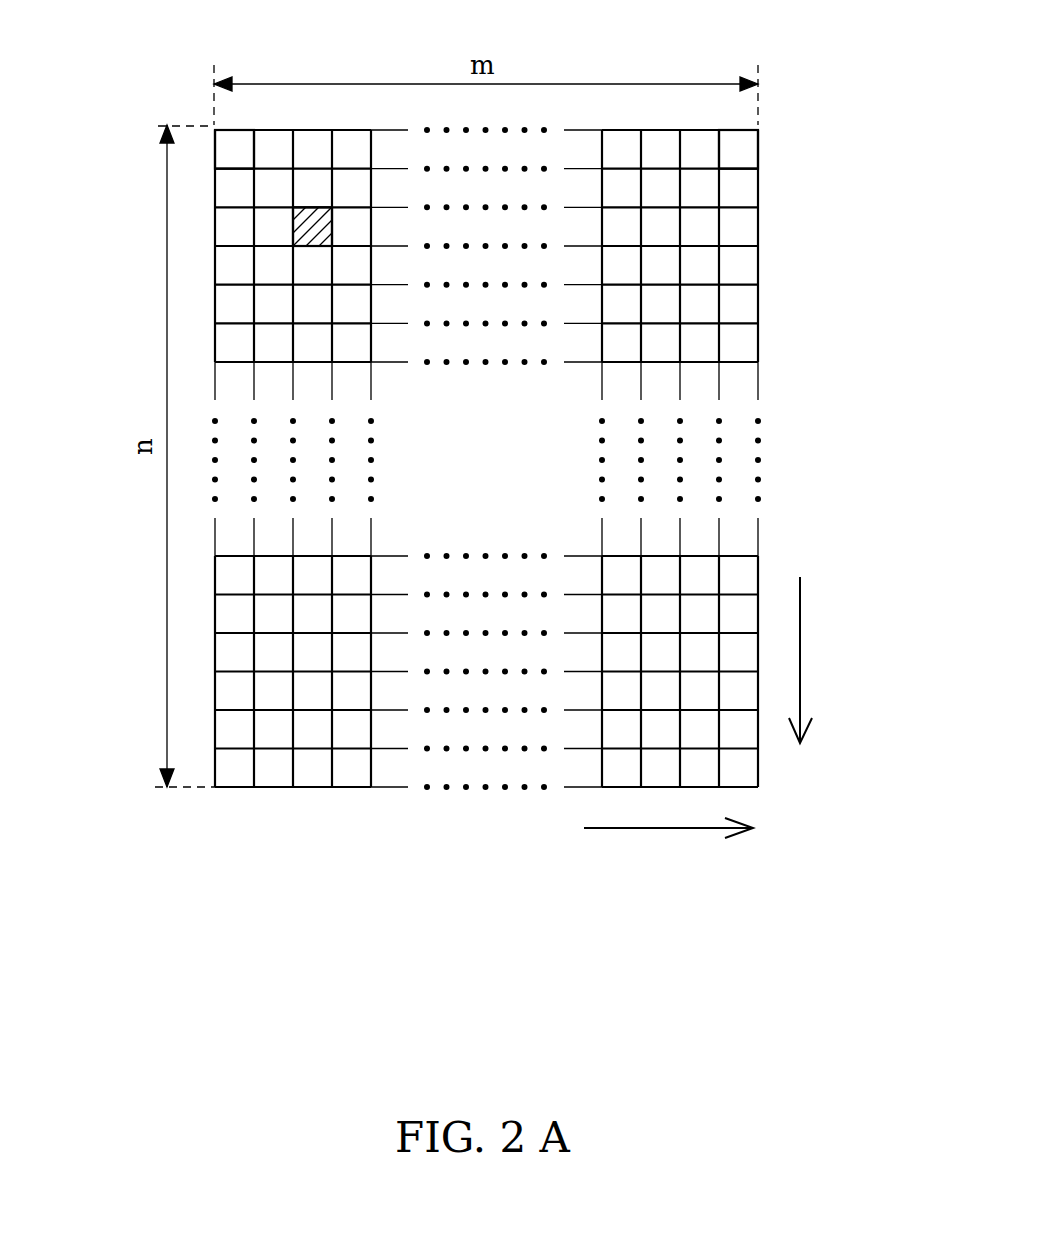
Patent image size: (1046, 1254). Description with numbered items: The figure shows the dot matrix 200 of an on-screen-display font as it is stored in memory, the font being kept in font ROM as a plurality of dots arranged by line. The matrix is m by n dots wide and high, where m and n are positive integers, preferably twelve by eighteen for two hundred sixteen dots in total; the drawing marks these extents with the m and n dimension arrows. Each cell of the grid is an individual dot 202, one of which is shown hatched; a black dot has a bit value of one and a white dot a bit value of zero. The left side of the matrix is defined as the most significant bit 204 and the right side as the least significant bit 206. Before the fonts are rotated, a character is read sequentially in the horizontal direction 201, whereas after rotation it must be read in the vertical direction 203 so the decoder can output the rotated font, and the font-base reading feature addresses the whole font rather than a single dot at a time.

The dot matrix 200 is at (543, 514).
The horizontal direction 201 is at (668, 830).
The dot 202 is at (320, 210).
The vertical direction 203 is at (803, 658).
The most significant bit (MSB) 204 is at (226, 148).
The least significant bit (LSB) 206 is at (748, 155).